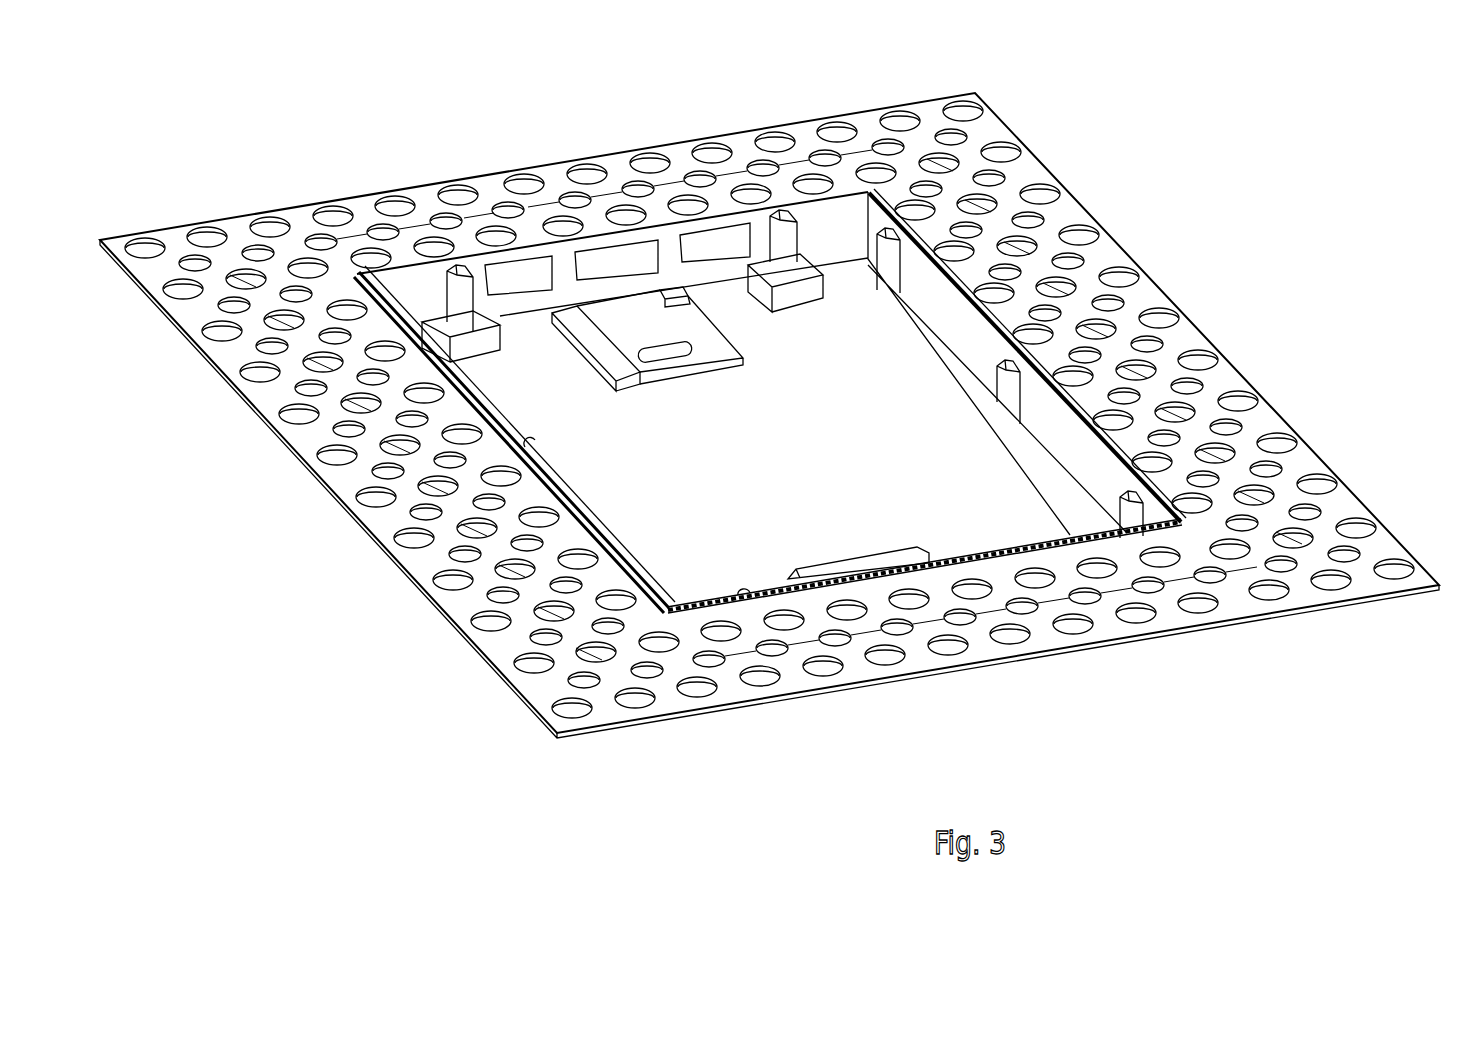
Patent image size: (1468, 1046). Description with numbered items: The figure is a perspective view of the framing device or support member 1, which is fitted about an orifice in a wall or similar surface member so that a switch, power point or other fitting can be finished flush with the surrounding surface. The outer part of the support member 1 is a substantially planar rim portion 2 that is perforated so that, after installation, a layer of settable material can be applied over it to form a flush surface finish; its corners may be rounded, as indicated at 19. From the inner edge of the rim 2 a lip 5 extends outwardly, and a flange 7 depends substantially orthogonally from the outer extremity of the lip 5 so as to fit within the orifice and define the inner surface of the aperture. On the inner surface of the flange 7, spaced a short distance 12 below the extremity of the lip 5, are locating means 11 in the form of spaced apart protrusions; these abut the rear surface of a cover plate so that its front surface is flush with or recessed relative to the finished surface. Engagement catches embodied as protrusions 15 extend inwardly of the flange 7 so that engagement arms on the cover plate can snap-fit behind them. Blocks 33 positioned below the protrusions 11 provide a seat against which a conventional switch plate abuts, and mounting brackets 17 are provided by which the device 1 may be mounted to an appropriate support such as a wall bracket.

The support member 1 is at (440, 637).
The rim portion 2 is at (801, 676).
The lip 5 is at (684, 329).
The flange 7 is at (957, 346).
The locating means 11 is at (794, 278).
The distance 12 is at (782, 204).
The protrusion 15 is at (523, 281).
The mounting bracket 17 is at (637, 373).
The rounded corner 19 is at (645, 723).
The blocks 33 is at (817, 298).